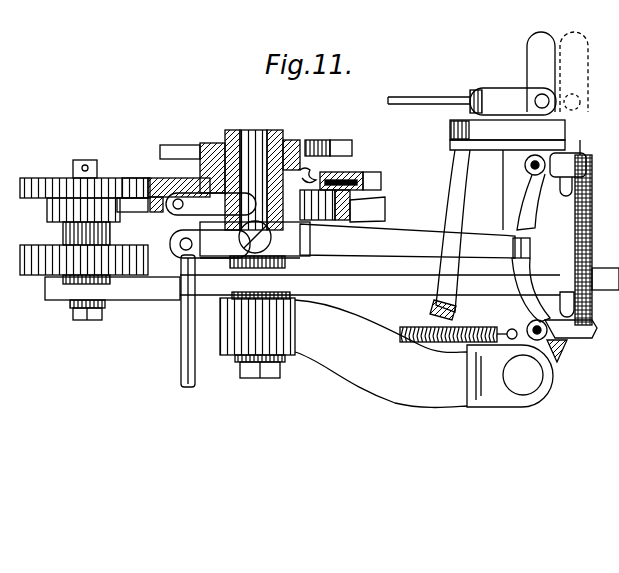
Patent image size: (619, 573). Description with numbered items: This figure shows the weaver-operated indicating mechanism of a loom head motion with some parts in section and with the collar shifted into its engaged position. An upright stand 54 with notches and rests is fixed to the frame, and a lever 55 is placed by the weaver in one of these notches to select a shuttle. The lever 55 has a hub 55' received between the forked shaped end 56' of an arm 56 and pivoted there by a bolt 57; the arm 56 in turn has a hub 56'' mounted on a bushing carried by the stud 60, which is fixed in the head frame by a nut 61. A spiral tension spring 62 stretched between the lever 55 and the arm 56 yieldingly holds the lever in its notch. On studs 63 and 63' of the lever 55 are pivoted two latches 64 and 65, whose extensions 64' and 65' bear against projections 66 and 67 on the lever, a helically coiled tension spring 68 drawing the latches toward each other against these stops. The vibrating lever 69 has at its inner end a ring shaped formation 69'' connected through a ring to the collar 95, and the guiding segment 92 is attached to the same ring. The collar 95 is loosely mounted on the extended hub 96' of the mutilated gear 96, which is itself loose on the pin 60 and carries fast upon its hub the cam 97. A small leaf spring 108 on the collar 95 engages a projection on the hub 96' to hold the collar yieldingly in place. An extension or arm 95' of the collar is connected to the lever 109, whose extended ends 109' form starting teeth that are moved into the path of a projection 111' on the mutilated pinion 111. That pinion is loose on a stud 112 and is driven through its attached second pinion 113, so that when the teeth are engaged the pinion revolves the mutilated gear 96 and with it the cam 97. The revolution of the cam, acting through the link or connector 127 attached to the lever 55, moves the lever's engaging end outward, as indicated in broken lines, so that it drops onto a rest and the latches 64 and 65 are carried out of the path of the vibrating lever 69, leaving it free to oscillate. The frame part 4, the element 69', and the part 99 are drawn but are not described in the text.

The frame rail 4 is at (412, 283).
The upright stand 54 is at (537, 126).
The lever 55 is at (512, 273).
The hub 55' is at (535, 70).
The arm 56 is at (381, 364).
The forked shaped end 56' is at (518, 381).
The hub 56'' is at (249, 378).
The bolt 57 is at (520, 380).
The stud 60 is at (254, 130).
The nut 61 is at (258, 378).
The spiral tension spring 62 is at (458, 333).
The stud 63 is at (518, 167).
The stud 63' is at (555, 348).
The latch 64 is at (521, 202).
The extension 64' is at (575, 151).
The latch 65 is at (525, 290).
The extension 65' is at (571, 338).
The projection 66 is at (565, 192).
The projection 67 is at (566, 294).
The helically coiled tension spring 68 is at (576, 240).
The vibrating lever 69 is at (407, 231).
The lever head 69' is at (532, 238).
The ring shaped formation 69'' is at (163, 321).
The guiding segment 92 is at (462, 182).
The collar 95 is at (230, 185).
The extension or arm 95' is at (207, 214).
The mutilated gear 96 is at (273, 181).
The extended hub 96' is at (305, 137).
The cam 97 is at (213, 160).
The bar 99 is at (182, 342).
The leaf spring 108 is at (305, 174).
The lever 109 is at (364, 165).
The extended ends 109' is at (268, 210).
The mutilated pinion 111 is at (84, 169).
The projection 111' is at (123, 167).
The stud 112 is at (82, 162).
The second pinion 113 is at (46, 253).
The link or connector 127 is at (437, 97).